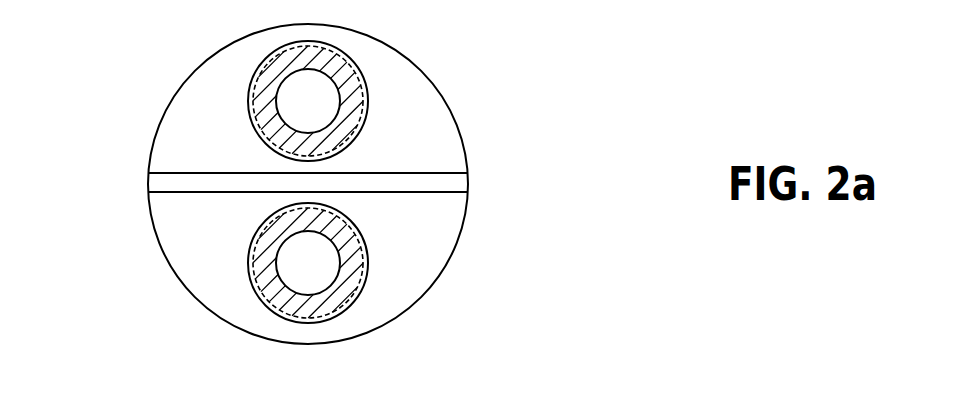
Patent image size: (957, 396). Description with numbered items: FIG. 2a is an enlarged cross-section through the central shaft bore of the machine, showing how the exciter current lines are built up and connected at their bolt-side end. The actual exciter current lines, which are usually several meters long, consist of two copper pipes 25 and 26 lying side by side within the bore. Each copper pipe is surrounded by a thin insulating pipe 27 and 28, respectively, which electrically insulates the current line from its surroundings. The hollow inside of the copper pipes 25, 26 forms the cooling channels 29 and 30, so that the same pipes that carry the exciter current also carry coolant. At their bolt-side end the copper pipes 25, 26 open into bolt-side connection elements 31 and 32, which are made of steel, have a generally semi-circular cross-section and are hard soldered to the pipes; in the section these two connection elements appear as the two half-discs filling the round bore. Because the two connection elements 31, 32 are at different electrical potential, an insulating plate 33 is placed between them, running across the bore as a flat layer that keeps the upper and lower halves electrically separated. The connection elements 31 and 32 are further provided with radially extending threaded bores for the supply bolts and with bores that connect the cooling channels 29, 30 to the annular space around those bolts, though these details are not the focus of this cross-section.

The copper pipe 25 is at (353, 263).
The copper pipe 26 is at (352, 101).
The insulating pipe 27 is at (260, 296).
The insulating pipe 28 is at (262, 70).
The cooling channel 29 is at (325, 274).
The cooling channel 30 is at (325, 114).
The bolt-side connection element 31 is at (222, 253).
The bolt-side connection element 32 is at (222, 135).
The insulating plate 33 is at (173, 182).